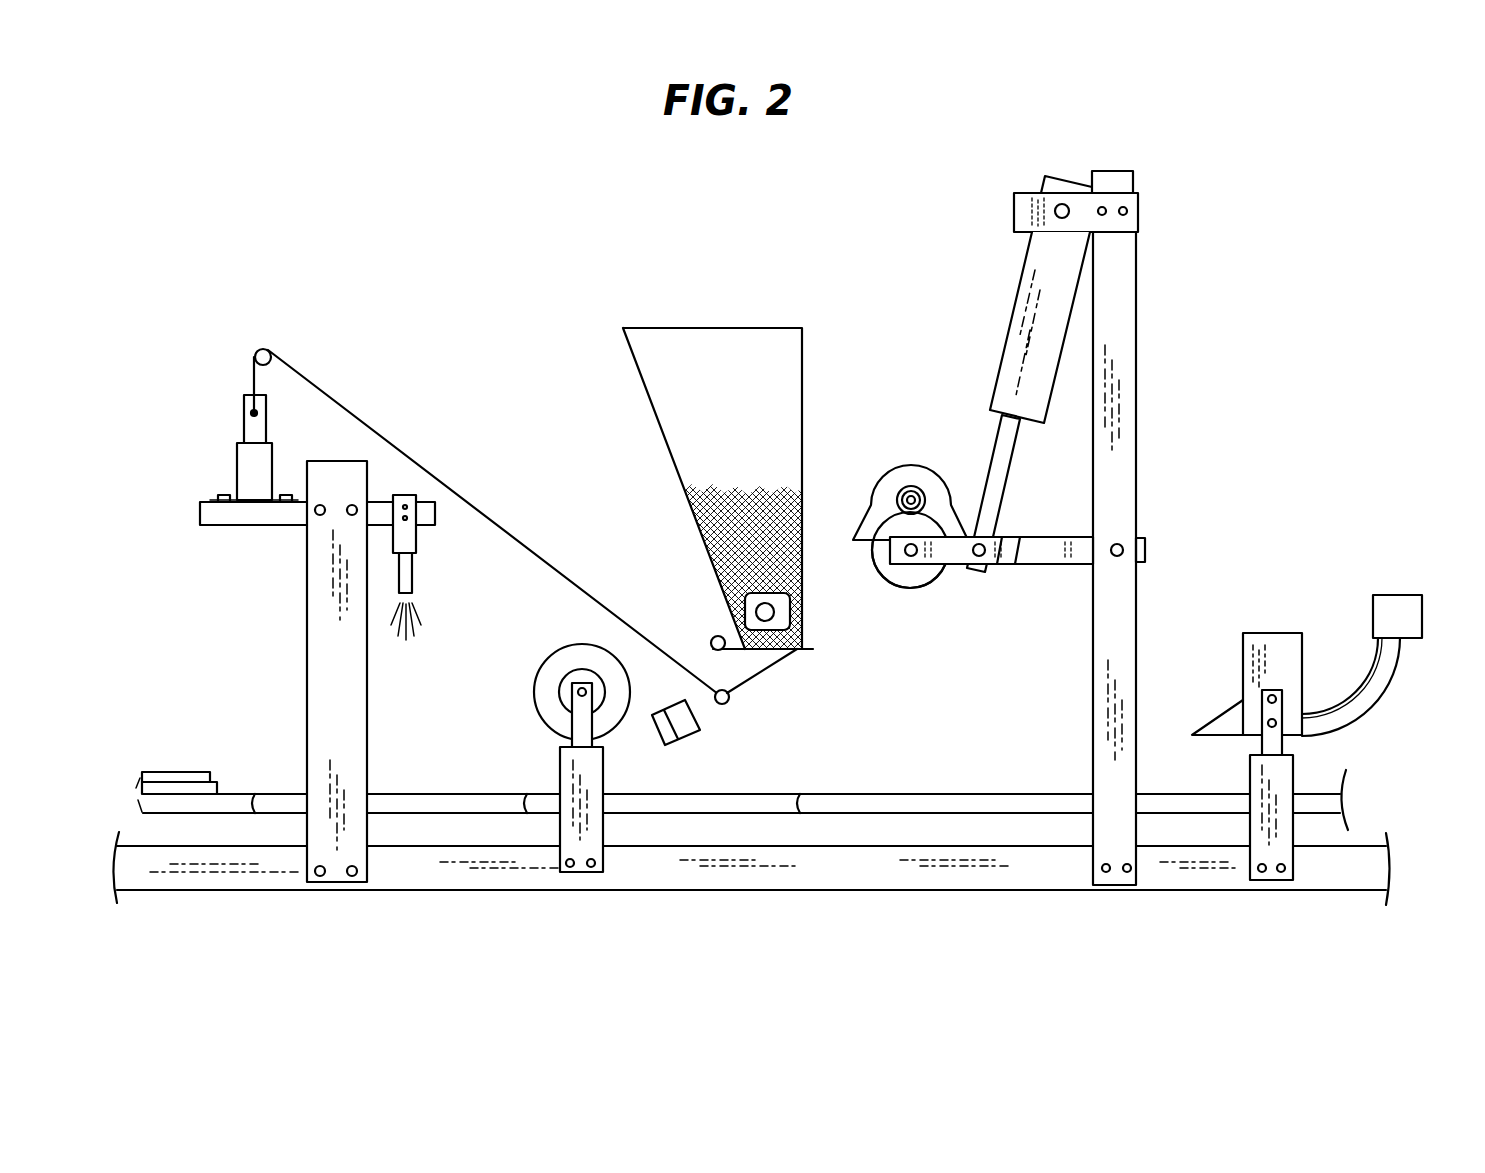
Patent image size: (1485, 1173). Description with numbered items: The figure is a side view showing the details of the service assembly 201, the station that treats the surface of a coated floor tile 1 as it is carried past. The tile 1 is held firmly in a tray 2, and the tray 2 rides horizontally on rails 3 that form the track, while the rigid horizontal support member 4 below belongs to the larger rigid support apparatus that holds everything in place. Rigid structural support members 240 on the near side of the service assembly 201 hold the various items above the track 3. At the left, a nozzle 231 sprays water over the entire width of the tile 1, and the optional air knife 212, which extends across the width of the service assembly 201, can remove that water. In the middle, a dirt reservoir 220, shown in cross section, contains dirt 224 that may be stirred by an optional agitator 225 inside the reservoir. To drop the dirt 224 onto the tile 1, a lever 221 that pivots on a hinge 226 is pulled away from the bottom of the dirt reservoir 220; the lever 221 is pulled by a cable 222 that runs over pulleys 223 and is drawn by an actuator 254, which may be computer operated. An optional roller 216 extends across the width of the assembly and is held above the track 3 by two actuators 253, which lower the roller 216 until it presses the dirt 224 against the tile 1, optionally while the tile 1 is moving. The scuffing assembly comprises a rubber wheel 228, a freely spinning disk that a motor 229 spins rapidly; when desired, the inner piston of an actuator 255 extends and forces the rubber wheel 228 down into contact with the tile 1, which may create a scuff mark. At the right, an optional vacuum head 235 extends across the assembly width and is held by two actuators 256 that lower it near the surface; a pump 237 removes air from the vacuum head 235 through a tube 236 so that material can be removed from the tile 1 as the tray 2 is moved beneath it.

The service assembly 201 is at (683, 208).
The coated floor tile 1 is at (168, 772).
The tray 2 is at (215, 782).
The rails 3 is at (268, 794).
The rigid horizontal support member 4 is at (183, 890).
The air knife 212 is at (700, 743).
The roller 216 is at (535, 697).
The dirt reservoir 220 is at (728, 327).
The lever 221 is at (808, 653).
The cable 222 is at (349, 410).
The pulleys 223 is at (263, 349).
The dirt 224 is at (770, 503).
The agitator 225 is at (774, 612).
The hinge 226 is at (712, 638).
The rubber wheel 228 is at (930, 588).
The motor 229 is at (915, 468).
The nozzle 231 is at (413, 588).
The vacuum head 235 is at (1275, 633).
The tube 236 is at (1378, 700).
The pump 237 is at (1397, 595).
The rigid structural support members 240 is at (200, 512).
The actuators 253 is at (581, 872).
The actuator 254 is at (237, 457).
The actuator 255 is at (1018, 282).
The actuators 256 is at (1270, 880).